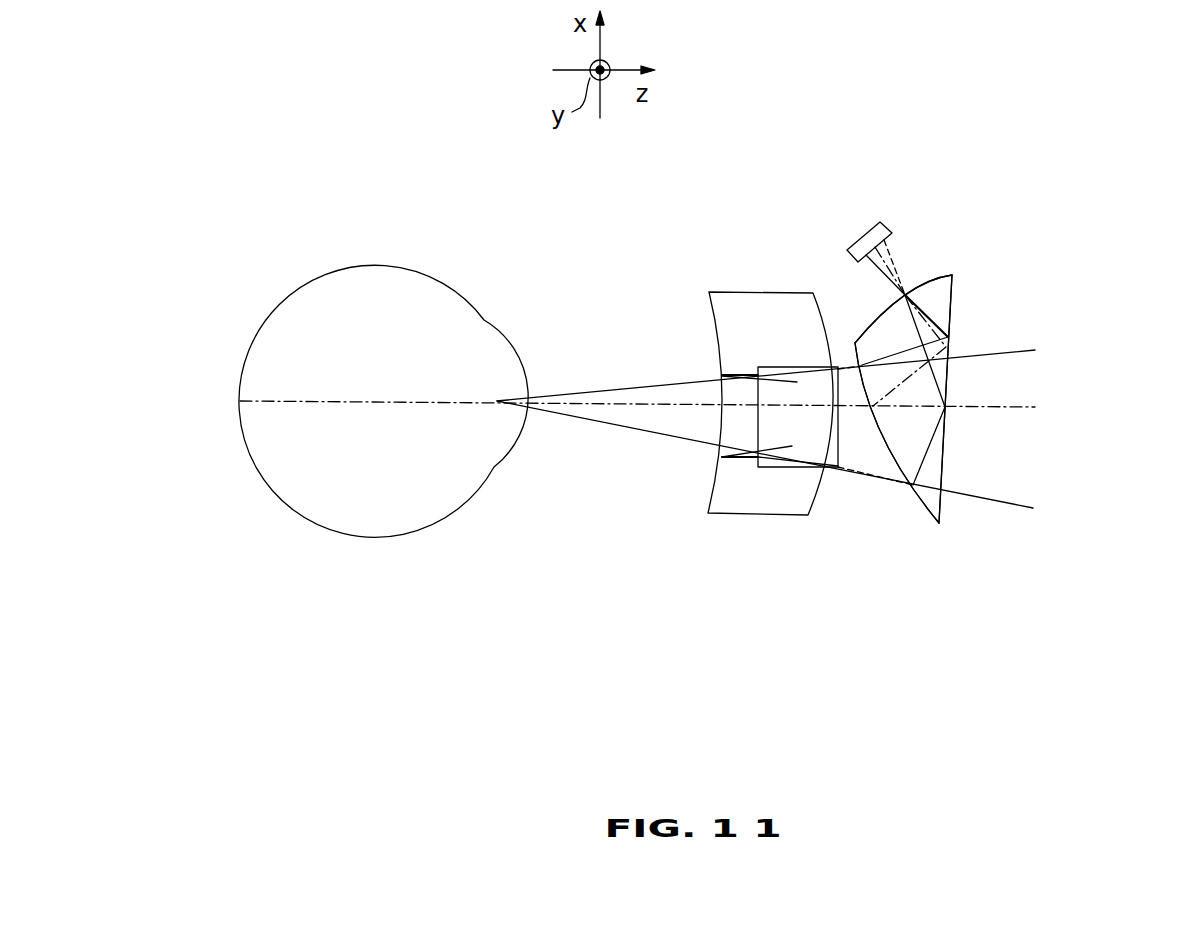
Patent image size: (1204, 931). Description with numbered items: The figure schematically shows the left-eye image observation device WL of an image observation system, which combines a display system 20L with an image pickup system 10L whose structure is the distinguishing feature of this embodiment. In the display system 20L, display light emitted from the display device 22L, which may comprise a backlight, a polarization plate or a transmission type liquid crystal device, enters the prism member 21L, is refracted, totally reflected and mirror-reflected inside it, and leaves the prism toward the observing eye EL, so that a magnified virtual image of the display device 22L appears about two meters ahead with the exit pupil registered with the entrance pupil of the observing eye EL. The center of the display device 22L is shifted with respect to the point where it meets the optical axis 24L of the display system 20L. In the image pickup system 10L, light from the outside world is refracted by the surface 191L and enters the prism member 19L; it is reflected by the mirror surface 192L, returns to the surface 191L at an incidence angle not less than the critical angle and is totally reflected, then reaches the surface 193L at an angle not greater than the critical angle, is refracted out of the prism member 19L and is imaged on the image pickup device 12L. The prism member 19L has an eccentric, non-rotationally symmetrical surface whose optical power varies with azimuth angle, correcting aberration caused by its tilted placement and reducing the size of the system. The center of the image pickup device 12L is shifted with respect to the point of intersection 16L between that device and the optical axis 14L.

The image pickup system 10L is at (939, 342).
The image pickup device 12L is at (881, 222).
The optical axis 14L is at (1015, 408).
The point of intersection 16L is at (860, 240).
The prism member 19L is at (992, 385).
The surface 191L is at (953, 310).
The mirror surface 192L is at (925, 503).
The surface 193L is at (940, 270).
The display system 20L is at (603, 507).
The prism member 21L is at (718, 497).
The display device 22L is at (802, 452).
The optical axis 24L is at (606, 406).
The observing eye EL is at (393, 335).
The left-eye image observation device WL is at (727, 178).